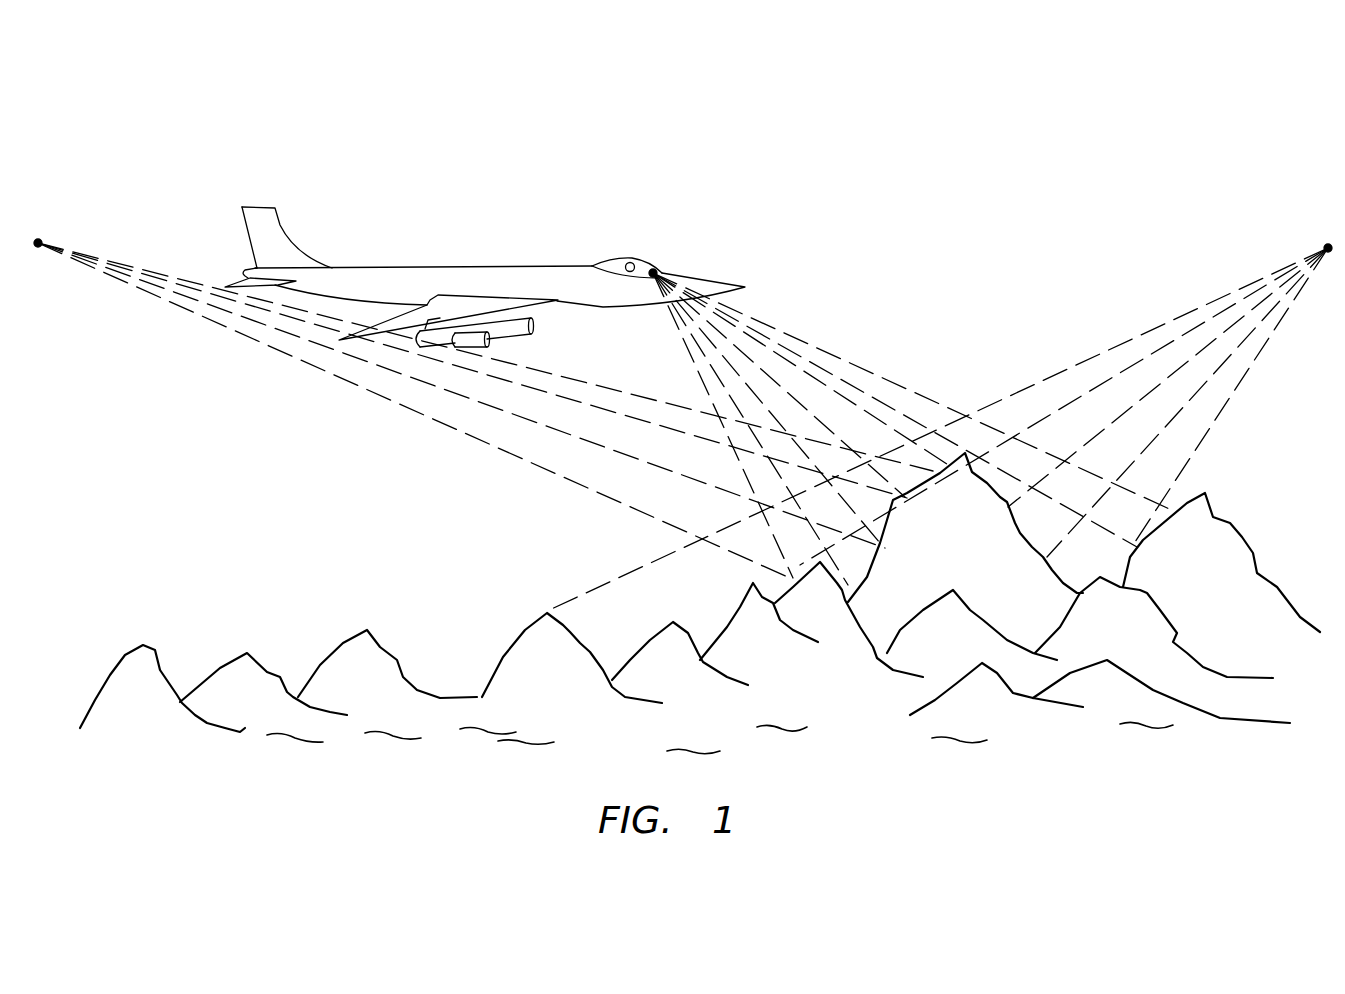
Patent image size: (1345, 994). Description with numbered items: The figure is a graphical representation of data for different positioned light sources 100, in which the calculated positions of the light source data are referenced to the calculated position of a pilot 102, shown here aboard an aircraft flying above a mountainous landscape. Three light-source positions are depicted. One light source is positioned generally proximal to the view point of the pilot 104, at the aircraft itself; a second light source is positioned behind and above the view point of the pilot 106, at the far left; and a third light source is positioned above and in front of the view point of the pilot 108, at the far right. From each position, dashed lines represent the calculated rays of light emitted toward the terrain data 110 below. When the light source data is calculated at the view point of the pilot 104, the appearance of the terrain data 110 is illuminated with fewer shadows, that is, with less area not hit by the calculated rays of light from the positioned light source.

The graphical representation of data for different positioned light sources 100 is at (480, 163).
The pilot 102 is at (617, 262).
The light source positioned generally proximal to a view point of a pilot 104 is at (657, 270).
The light source positioned behind and above the view point of a pilot 106 is at (38, 242).
The light source positioned above and in front of the view point of a pilot 108 is at (1328, 248).
The terrain data 110 is at (1217, 542).